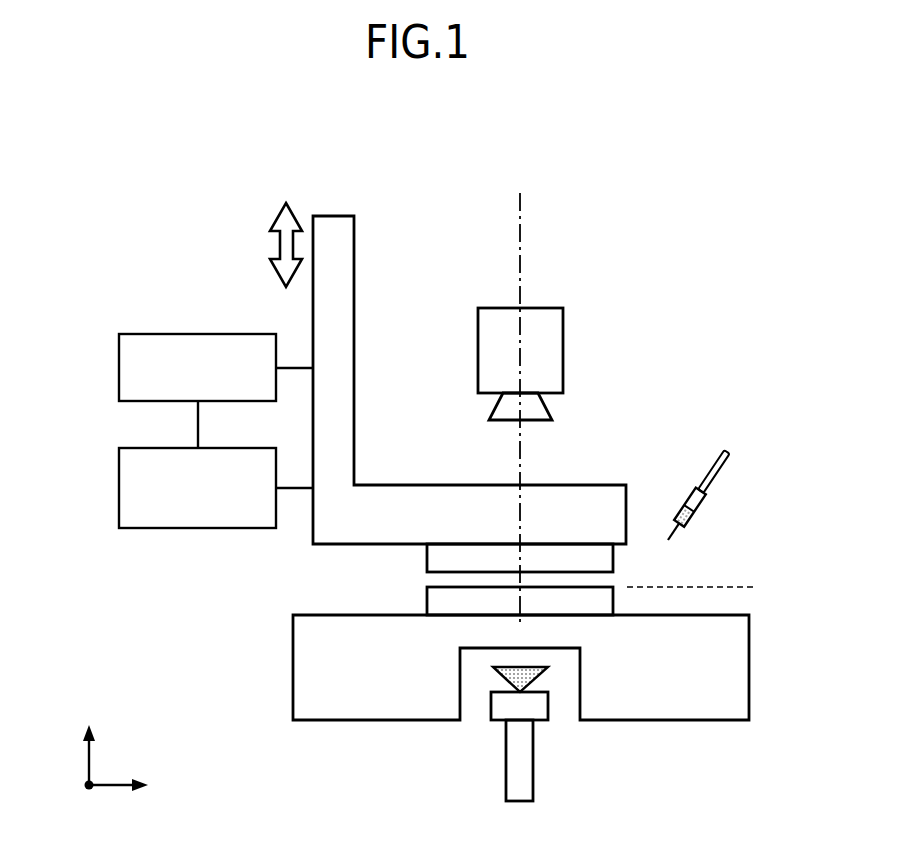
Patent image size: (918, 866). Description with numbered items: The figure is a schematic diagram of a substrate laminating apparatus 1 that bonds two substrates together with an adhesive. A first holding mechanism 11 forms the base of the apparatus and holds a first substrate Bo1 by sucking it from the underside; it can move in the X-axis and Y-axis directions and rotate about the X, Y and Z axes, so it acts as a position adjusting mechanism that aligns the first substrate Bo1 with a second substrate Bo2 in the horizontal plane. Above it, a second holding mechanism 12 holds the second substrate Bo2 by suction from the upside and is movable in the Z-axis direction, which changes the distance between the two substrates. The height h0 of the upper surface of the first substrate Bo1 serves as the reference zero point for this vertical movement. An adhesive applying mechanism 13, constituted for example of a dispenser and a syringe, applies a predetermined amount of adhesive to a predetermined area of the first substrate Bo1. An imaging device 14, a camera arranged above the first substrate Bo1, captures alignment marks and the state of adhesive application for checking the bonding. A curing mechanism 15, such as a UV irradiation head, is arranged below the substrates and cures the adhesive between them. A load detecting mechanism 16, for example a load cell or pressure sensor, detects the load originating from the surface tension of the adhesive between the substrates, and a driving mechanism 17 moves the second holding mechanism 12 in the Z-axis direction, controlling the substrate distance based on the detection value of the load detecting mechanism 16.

The substrate laminating apparatus 1 is at (146, 183).
The first holding mechanism 11 is at (749, 663).
The second holding mechanism 12 is at (605, 485).
The adhesive applying mechanism 13 is at (703, 506).
The imaging device 14 is at (563, 350).
The curing mechanism 15 is at (533, 765).
The load detecting mechanism 16 is at (219, 448).
The driving mechanism 17 is at (219, 334).
The first substrate Bo1 is at (427, 603).
The second substrate Bo2 is at (427, 563).
The height of upper surface of first substrate h0 is at (705, 588).